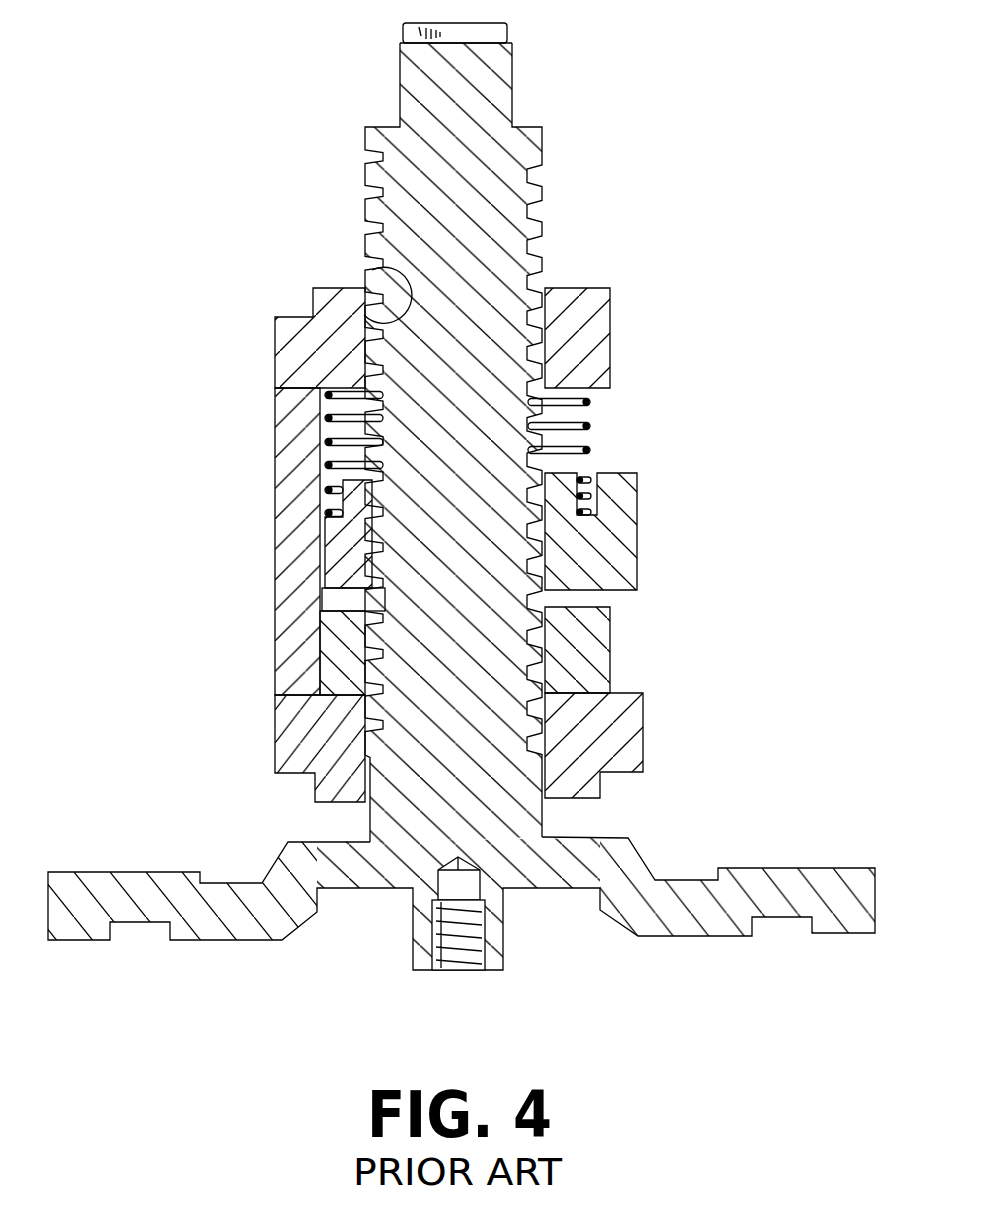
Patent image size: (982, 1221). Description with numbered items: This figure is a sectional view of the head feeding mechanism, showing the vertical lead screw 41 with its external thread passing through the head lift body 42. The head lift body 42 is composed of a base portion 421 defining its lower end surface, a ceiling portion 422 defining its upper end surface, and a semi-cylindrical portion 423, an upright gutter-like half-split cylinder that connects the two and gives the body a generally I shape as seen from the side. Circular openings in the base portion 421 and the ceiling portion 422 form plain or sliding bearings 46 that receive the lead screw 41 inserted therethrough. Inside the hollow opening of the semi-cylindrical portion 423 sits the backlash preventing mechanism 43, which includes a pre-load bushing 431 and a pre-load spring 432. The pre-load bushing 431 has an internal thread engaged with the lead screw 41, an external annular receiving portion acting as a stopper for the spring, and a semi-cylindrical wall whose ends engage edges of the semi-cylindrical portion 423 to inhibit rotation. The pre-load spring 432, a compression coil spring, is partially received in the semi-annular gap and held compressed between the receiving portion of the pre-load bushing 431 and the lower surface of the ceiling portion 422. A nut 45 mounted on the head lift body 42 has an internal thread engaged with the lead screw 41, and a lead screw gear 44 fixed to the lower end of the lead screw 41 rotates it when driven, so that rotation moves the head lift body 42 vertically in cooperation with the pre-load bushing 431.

The lead screw 41 is at (528, 133).
The head lift body 42 is at (158, 317).
The base portion 421 is at (292, 738).
The ceiling portion 422 is at (292, 348).
The semi-cylindrical portion 423 is at (290, 522).
The backlash preventing mechanism 43 is at (752, 397).
The pre-load bushing 431 is at (620, 530).
The pre-load spring 432 is at (586, 426).
The lead screw gear 44 is at (753, 868).
The nut 45 is at (602, 642).
The sliding bearing 46 is at (370, 268).